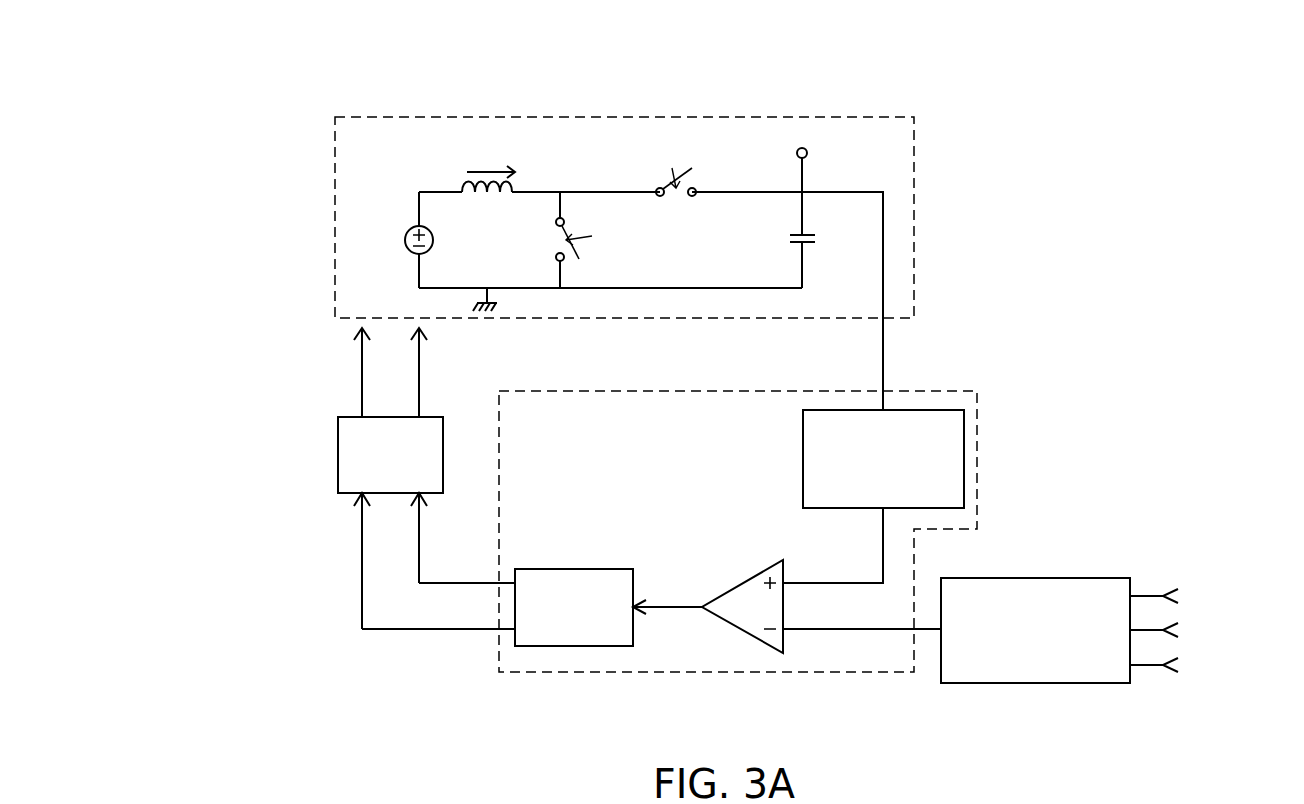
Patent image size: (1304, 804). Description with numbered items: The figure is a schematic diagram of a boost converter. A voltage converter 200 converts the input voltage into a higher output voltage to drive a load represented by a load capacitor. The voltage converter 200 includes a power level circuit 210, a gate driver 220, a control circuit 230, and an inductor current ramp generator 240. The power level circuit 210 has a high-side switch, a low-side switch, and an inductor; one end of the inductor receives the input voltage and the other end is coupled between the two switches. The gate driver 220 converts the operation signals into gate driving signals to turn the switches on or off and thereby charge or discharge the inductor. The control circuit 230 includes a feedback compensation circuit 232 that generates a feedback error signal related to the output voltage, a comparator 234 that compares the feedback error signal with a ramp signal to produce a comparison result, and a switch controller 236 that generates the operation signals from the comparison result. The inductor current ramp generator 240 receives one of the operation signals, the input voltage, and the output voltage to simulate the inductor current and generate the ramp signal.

The voltage converter 200 is at (236, 85).
The power level circuit 210 is at (624, 115).
The gate driver 220 is at (338, 455).
The control circuit 230 is at (727, 389).
The feedback compensation circuit 232 is at (803, 459).
The comparator 234 is at (745, 579).
The switch controller 236 is at (576, 568).
The inductor current ramp generator 240 is at (1040, 577).